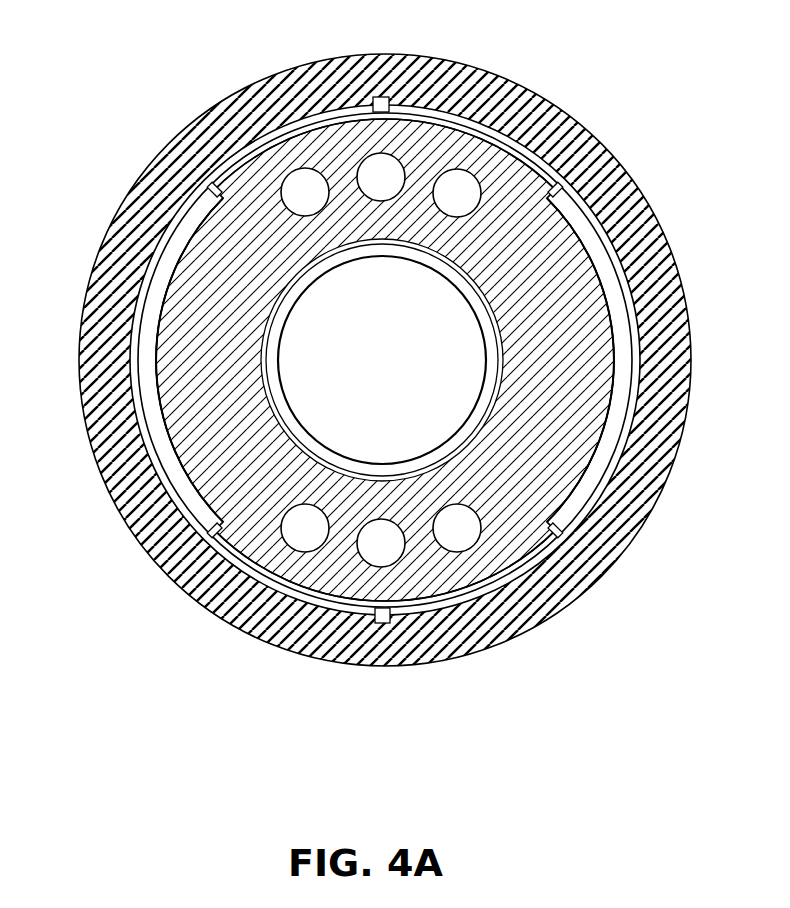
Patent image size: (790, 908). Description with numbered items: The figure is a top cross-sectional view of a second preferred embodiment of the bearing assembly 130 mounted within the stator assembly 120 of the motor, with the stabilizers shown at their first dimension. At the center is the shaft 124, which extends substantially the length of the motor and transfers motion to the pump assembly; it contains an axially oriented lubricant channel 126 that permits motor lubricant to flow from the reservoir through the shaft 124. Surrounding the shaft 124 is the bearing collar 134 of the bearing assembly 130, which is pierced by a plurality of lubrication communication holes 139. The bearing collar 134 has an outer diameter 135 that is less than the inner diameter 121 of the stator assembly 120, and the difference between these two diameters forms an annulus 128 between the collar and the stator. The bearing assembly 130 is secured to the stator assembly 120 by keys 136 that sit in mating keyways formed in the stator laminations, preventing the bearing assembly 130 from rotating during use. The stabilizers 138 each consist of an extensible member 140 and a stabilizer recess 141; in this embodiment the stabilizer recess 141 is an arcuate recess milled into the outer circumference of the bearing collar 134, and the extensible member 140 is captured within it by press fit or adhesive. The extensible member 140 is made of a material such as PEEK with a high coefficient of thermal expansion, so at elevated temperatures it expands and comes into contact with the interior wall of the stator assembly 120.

The stator assembly 120 is at (146, 150).
The inner diameter 121 is at (143, 465).
The shaft 124 is at (228, 182).
The lubricant channel 126 is at (470, 275).
The annulus 128 is at (168, 498).
The bearing assembly 130 is at (290, 295).
The bearing collar 134 is at (548, 532).
The outer diameter 135 is at (537, 163).
The key 136 is at (382, 97).
The stabilizer 138 is at (644, 348).
The lubrication communication holes 139 is at (306, 190).
The extensible member 140 is at (597, 258).
The stabilizer recess 141 is at (557, 190).